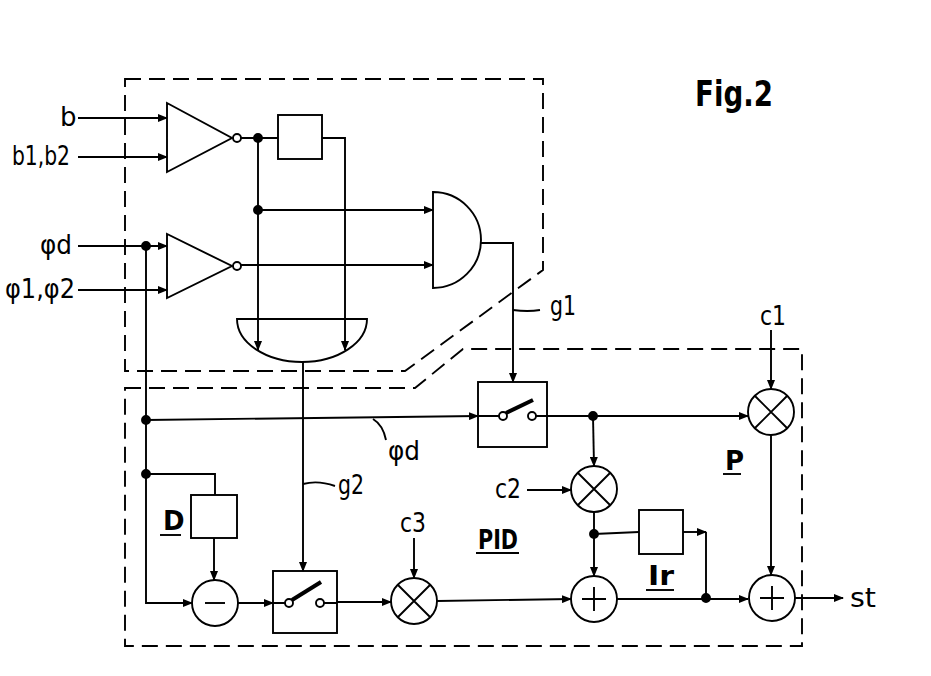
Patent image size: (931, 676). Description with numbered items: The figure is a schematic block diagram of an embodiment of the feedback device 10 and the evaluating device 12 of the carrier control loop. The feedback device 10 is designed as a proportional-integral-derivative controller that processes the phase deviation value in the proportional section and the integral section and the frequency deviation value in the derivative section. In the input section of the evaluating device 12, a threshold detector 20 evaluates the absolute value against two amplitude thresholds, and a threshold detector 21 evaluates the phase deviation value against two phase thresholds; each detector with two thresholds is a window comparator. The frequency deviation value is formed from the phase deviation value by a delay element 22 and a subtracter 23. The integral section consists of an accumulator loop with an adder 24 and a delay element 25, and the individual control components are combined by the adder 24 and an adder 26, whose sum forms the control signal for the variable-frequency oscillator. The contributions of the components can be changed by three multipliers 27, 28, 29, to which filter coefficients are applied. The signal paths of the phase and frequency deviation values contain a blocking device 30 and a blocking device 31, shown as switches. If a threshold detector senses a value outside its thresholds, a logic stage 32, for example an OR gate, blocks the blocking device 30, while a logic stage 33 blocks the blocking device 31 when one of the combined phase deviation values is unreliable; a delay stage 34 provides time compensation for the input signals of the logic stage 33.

The feedback device 10 is at (122, 506).
The evaluating device 12 is at (545, 120).
The threshold detector 20 is at (214, 126).
The threshold detector 21 is at (214, 254).
The delay element 22 is at (228, 495).
The subtracter 23 is at (200, 588).
The adder 24 is at (612, 608).
The delay element 25 is at (683, 513).
The adder 26 is at (757, 612).
The multiplier 27 is at (795, 412).
The multiplier 28 is at (612, 474).
The multiplier 29 is at (432, 588).
The blocking device 30 is at (547, 390).
The blocking device 31 is at (325, 571).
The logic stage 32 is at (450, 196).
The logic stage 33 is at (258, 351).
The delay stage 34 is at (322, 118).